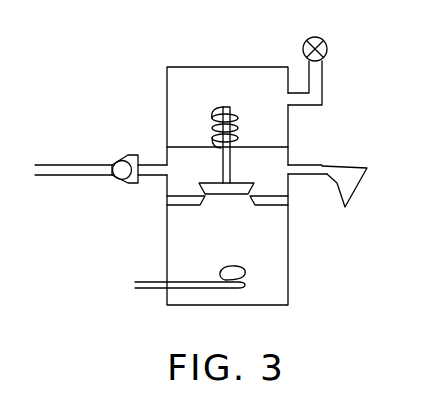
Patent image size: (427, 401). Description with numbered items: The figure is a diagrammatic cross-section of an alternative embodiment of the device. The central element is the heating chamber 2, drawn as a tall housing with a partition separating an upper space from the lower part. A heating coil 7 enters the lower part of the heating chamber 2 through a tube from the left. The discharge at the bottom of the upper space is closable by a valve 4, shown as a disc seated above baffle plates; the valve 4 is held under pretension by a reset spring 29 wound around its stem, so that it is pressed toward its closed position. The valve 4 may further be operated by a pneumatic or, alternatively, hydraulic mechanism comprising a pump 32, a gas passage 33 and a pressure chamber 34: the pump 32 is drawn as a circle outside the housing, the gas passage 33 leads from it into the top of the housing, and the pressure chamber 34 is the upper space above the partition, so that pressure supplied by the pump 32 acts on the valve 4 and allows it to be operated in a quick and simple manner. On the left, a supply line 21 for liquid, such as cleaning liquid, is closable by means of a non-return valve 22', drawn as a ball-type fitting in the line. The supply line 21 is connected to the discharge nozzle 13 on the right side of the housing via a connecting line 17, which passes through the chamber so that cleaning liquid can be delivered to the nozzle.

The heating chamber 2 is at (274, 268).
The valve 4 is at (225, 188).
The heating coil 7 is at (225, 278).
The discharge nozzle 13 is at (322, 168).
The connecting line 17 is at (238, 167).
The supply line 21 is at (65, 168).
The non-return valve 22' is at (98, 219).
The reset spring 29 is at (212, 130).
The pump 32 is at (327, 47).
The gas passage 33 is at (298, 92).
The pressure chamber 34 is at (203, 92).